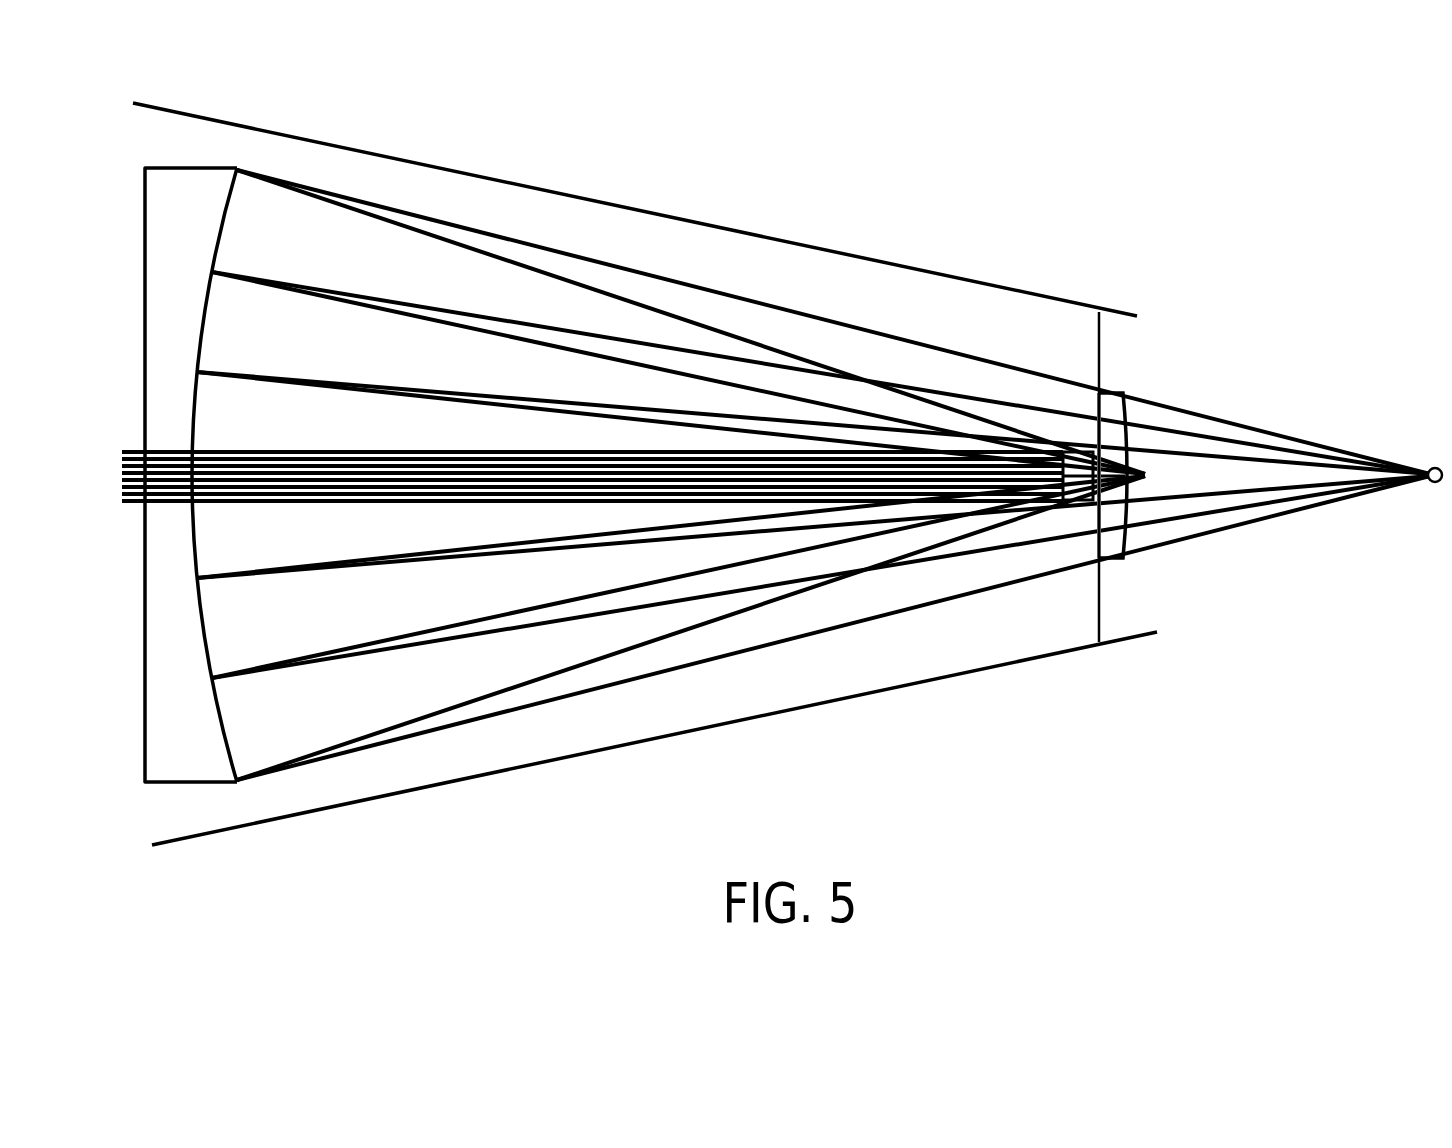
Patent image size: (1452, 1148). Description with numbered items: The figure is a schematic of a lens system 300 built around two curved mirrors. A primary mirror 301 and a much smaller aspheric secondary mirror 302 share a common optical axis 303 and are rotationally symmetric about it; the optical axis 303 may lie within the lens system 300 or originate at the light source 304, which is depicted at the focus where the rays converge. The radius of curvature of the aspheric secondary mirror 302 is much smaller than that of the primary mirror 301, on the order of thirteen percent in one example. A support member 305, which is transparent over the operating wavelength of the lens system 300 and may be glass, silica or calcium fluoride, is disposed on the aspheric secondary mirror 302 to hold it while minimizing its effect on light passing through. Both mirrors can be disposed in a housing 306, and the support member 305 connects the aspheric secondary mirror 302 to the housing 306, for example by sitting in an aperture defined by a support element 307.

The lens system 300 is at (940, 308).
The primary mirror 301 is at (217, 167).
The aspheric secondary mirror 302 is at (1064, 450).
The optical axis 303 is at (1220, 675).
The light source 304 is at (1426, 472).
The support member 305 is at (1098, 547).
The housing 306 is at (1118, 645).
The support element 307 is at (1100, 590).